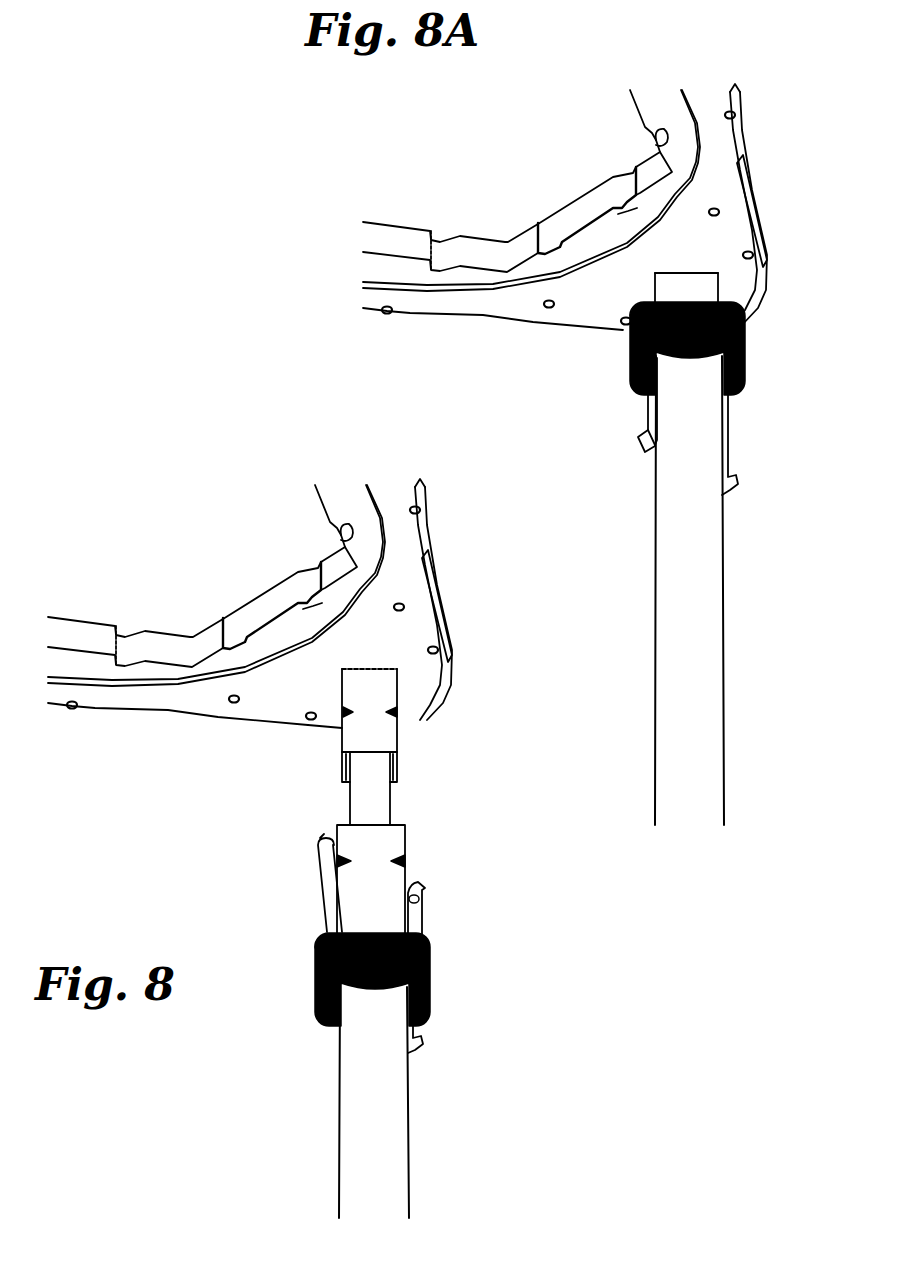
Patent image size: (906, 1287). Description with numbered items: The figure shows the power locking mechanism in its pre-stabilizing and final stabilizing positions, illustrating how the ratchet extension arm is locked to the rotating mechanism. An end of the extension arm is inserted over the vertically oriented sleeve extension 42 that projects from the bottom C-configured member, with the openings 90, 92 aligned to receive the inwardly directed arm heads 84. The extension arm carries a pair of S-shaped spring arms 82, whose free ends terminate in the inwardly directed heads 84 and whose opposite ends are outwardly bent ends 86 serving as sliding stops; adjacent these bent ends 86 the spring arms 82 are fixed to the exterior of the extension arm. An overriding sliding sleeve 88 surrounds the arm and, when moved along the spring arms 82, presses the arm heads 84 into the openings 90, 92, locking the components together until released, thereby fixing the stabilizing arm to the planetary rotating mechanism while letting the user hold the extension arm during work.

In FIG. 8, the sleeve extension 42 is at (395, 738).
In FIG. 8A, the S-shaped spring arms 82 is at (653, 410).
In FIG. 8, the S-shaped spring arms 82 is at (422, 925).
In FIG. 8, the inwardly directed head 84 is at (410, 890).
In FIG. 8A, the outwardly bent opposite ends 86 is at (733, 483).
In FIG. 8, the outwardly bent opposite ends 86 is at (418, 1035).
In FIG. 8A, the overriding sliding sleeve 88 is at (743, 338).
In FIG. 8, the overriding sliding sleeve 88 is at (432, 988).
In FIG. 8, the opening 90 is at (405, 858).
In FIG. 8, the opening 92 is at (398, 713).